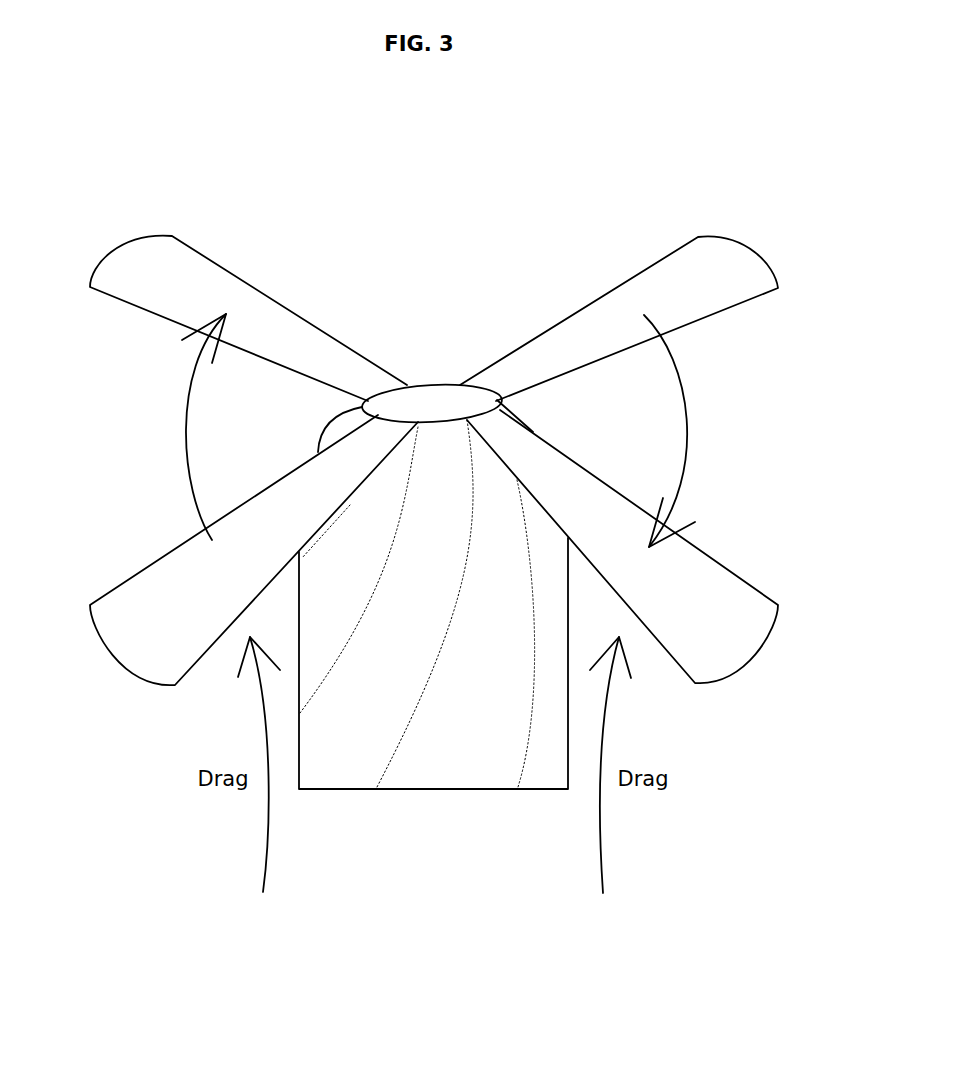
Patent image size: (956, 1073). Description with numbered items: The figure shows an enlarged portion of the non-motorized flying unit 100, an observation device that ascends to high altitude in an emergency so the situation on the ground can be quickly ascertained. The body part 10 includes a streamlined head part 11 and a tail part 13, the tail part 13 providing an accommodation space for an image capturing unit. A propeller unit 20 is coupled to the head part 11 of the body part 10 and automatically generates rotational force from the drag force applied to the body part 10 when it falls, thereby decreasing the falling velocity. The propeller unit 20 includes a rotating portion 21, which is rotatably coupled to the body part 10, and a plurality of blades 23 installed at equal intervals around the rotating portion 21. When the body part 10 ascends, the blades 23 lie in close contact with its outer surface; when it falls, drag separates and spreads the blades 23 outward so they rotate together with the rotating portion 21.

The non-motorized flying unit 100 is at (583, 239).
The propeller unit 20 is at (510, 203).
The rotating portion 21 is at (428, 395).
The blades 23 is at (532, 357).
The head part 11 is at (530, 420).
The body part 10 is at (488, 806).
The tail part 13 is at (428, 757).